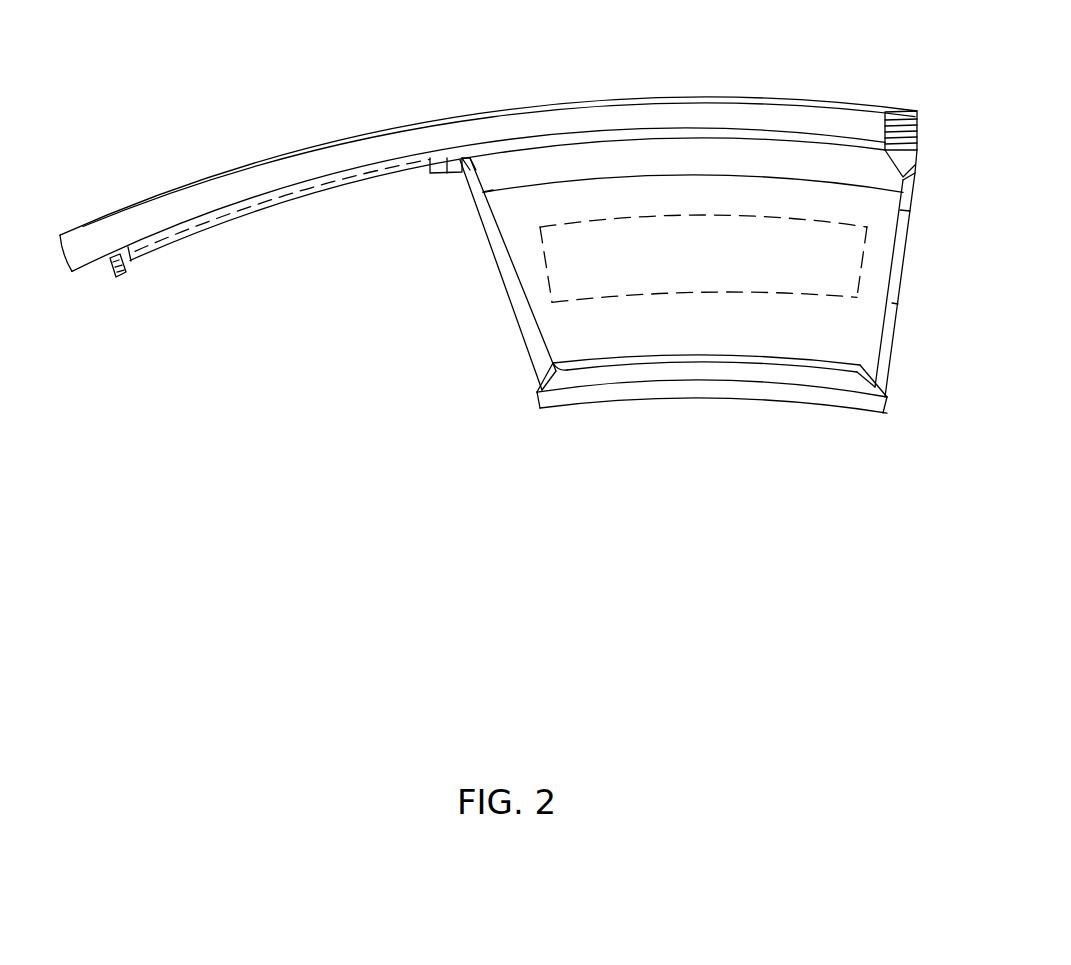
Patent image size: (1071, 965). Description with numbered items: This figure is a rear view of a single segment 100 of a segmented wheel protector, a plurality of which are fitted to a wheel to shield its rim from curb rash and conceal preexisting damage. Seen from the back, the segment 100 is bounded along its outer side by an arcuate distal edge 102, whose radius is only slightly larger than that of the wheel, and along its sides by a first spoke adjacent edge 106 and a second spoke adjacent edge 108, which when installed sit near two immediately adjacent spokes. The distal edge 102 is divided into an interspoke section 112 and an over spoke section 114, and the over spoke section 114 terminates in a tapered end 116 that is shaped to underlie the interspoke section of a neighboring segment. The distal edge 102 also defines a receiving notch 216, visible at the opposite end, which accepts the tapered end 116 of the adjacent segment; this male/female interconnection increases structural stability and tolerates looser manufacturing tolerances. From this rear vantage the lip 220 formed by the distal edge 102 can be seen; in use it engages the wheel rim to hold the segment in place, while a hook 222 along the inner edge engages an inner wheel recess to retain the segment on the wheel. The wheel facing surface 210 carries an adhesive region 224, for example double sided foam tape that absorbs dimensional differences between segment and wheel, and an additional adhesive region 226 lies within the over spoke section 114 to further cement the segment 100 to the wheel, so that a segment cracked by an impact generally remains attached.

The segment 100 is at (600, 487).
The distal edge 102 is at (537, 107).
The first spoke adjacent edge 106 is at (887, 327).
The second spoke adjacent edge 108 is at (507, 287).
The interspoke section 112 is at (727, 98).
The over spoke section 114 is at (247, 167).
The tapered end 116 is at (68, 237).
The wheel facing surface 210 is at (668, 339).
The receiving notch 216 is at (897, 112).
The lip 220 is at (430, 159).
The hook 222 is at (557, 368).
The adhesive region 224 is at (573, 237).
The additional adhesive region 226 is at (247, 212).